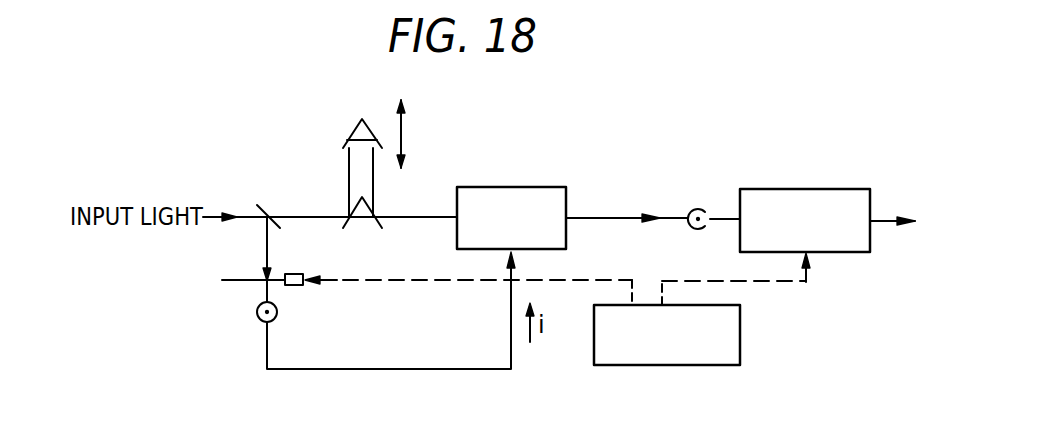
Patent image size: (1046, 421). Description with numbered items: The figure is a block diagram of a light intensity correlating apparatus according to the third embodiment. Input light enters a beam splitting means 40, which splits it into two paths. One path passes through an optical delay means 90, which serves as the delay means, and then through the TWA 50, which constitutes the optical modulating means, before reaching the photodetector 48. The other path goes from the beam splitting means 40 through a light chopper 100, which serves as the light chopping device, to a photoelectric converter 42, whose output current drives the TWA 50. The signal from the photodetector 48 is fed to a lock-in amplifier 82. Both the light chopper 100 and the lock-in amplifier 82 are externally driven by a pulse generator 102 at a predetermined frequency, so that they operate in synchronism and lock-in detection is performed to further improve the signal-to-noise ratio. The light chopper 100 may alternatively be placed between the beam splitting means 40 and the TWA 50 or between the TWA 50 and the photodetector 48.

The beam splitting means 40 is at (262, 207).
The optical delay means 90 is at (352, 135).
The TWA 50 is at (548, 187).
The photodetector 48 is at (697, 208).
The lock-in amplifier 82 is at (850, 189).
The photoelectric converter 42 is at (257, 316).
The light chopper 100 is at (298, 285).
The pulse generator 102 is at (740, 350).